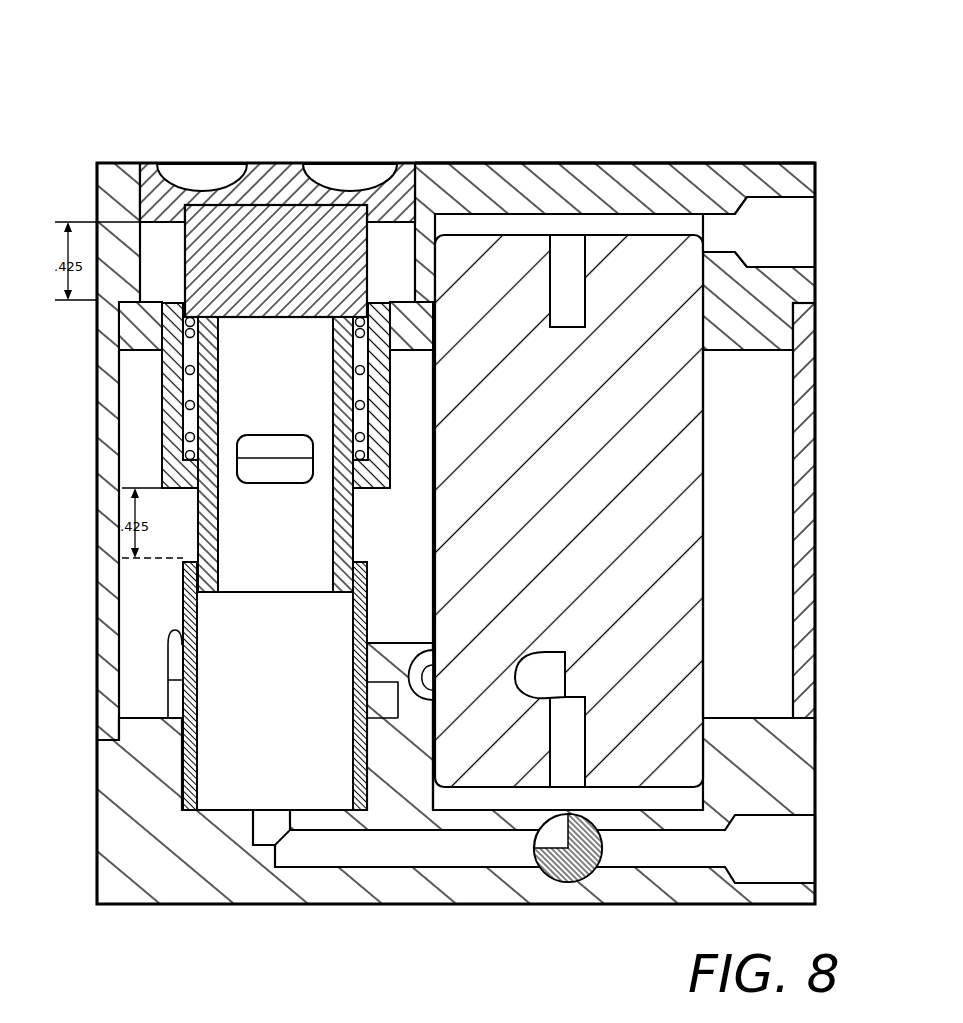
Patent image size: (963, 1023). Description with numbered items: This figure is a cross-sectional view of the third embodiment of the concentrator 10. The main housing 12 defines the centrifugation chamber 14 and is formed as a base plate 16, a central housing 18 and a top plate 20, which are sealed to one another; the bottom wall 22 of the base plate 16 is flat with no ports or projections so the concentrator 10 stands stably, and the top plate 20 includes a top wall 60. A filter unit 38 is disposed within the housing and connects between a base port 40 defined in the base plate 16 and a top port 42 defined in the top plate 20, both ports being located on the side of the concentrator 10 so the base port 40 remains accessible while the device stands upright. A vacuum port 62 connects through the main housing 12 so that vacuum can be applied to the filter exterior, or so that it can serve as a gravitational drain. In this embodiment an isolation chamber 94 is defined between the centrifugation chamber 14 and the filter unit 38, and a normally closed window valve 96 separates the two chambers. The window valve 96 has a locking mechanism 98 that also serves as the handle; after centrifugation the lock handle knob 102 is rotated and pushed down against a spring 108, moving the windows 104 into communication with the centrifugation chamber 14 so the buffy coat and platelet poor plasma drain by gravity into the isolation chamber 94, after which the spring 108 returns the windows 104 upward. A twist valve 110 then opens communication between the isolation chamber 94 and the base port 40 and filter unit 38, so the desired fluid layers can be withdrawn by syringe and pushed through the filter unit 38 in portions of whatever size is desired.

The concentrator 10 is at (158, 78).
The main housing 12 is at (90, 366).
The centrifugation chamber 14 is at (762, 491).
The base plate 16 is at (798, 798).
The central housing 18 is at (803, 428).
The top plate 20 is at (560, 180).
The bottom wall 22 is at (365, 906).
The filter unit 38 is at (698, 522).
The base port 40 is at (790, 843).
The top port 42 is at (785, 233).
The top wall 60 is at (681, 163).
The vacuum port 62 is at (415, 662).
The isolation chamber 94 is at (277, 693).
The window valve 96 is at (190, 542).
The locking mechanism 98 is at (262, 162).
The lock handle knob 102 is at (276, 162).
The windows 104 is at (237, 460).
The spring 108 is at (183, 443).
The twist valve 110 is at (586, 881).